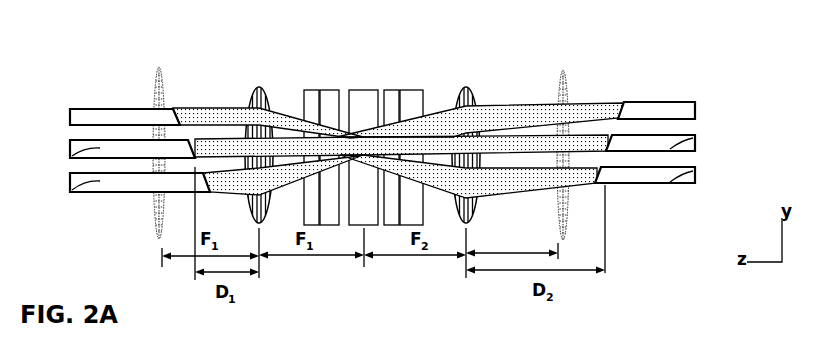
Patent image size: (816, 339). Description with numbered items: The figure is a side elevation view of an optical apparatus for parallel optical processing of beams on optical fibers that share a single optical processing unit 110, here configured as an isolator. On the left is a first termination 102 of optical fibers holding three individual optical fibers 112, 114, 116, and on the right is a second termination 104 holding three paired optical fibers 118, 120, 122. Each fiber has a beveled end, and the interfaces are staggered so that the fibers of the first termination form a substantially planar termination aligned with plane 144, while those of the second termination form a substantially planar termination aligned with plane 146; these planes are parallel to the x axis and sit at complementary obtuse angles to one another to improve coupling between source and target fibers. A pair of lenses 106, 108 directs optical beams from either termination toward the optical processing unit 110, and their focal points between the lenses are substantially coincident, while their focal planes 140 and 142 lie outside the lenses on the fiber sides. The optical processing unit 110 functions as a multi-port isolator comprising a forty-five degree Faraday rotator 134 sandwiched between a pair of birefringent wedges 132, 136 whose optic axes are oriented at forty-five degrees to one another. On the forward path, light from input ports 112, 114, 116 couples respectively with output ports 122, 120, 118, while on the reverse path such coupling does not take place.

The first termination 102 is at (114, 135).
The second termination 104 is at (673, 109).
The lens 106 is at (258, 86).
The lens 108 is at (467, 87).
The optical processing unit 110 is at (371, 127).
The optical fiber 112 is at (70, 192).
The optical fiber 114 is at (72, 148).
The optical fiber 116 is at (100, 117).
The optical fiber 118 is at (672, 108).
The optical fiber 120 is at (698, 146).
The optical fiber 122 is at (698, 188).
The birefringent wedge 132 is at (318, 90).
The Faraday rotator 134 is at (361, 90).
The birefringent wedge 136 is at (405, 90).
The focal plane 140 is at (157, 106).
The focal plane 142 is at (566, 70).
The planar termination 144 is at (170, 95).
The planar termination 146 is at (636, 70).